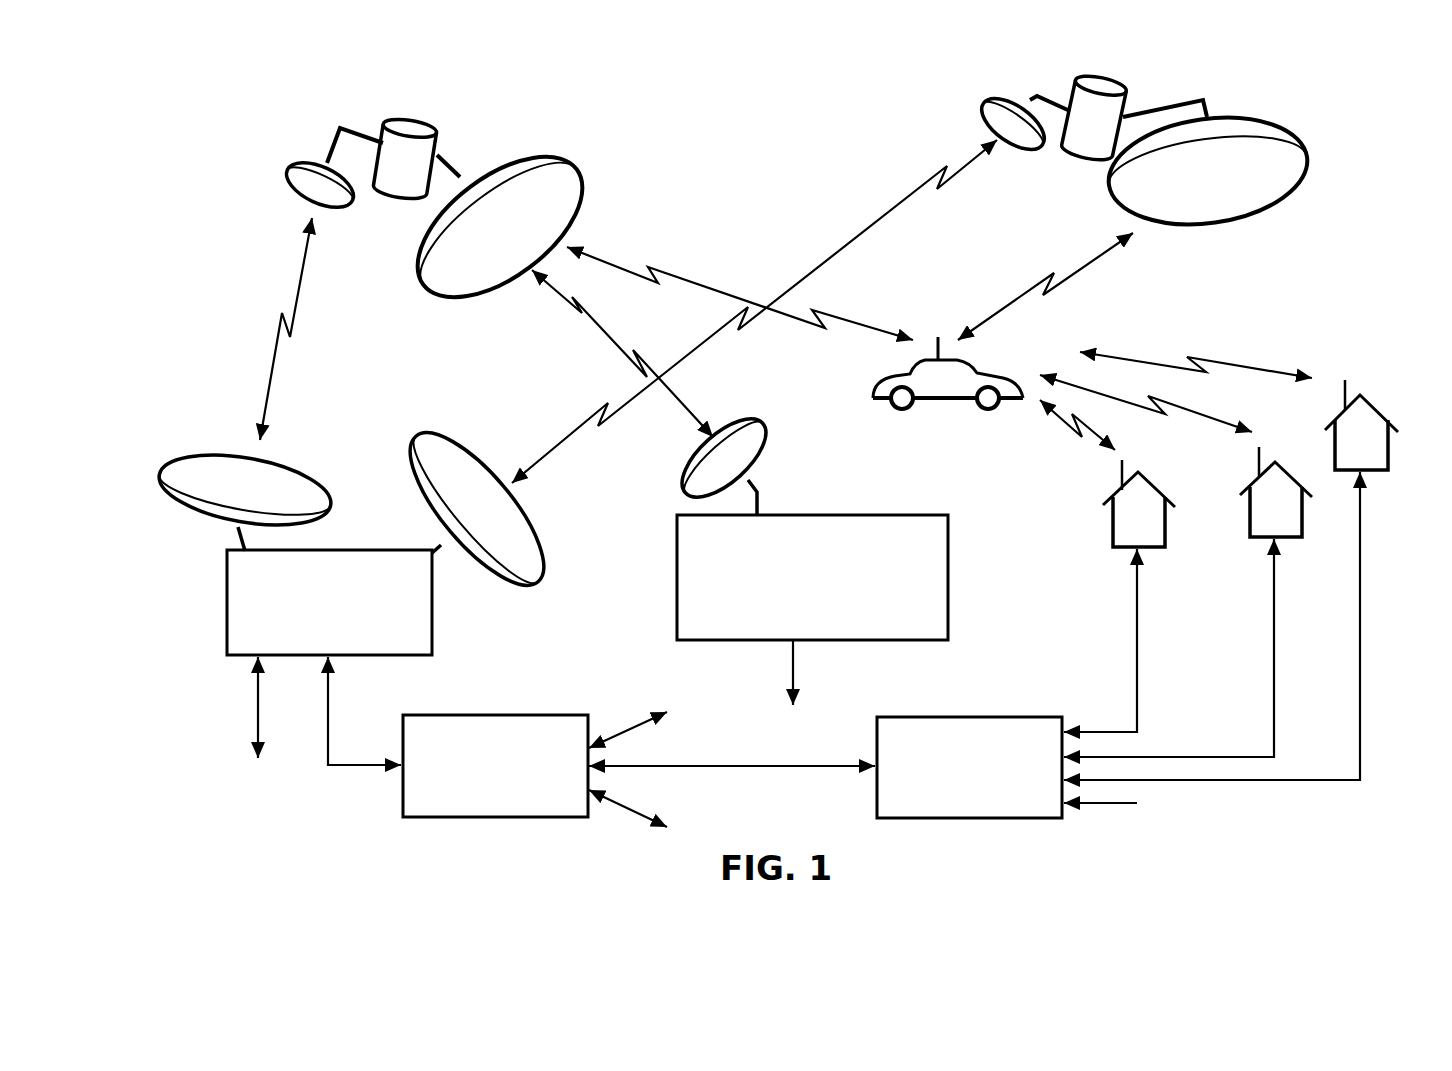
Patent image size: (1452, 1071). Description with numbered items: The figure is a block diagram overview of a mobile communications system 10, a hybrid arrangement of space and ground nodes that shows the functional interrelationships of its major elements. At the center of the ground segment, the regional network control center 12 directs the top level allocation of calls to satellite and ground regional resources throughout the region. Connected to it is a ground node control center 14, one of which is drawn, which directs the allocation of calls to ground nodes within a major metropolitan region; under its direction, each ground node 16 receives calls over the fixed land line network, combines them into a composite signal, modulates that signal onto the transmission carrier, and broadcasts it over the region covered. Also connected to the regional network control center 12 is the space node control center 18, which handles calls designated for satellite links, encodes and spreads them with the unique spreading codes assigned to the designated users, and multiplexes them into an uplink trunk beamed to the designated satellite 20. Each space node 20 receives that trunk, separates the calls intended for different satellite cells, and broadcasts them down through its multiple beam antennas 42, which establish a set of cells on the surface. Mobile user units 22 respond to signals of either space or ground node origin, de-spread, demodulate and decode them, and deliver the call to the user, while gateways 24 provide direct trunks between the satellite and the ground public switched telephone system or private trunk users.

The mobile communications system 10 is at (1237, 77).
The regional network control center 12 is at (528, 715).
The ground node control center 14 is at (978, 717).
The ground node 16 is at (1112, 530).
The space node control center 18 is at (433, 635).
The satellite (space node) 20 is at (418, 123).
The mobile user unit 22 is at (954, 400).
The gateway 24 is at (948, 593).
The multiple beam antenna 42 is at (520, 157).